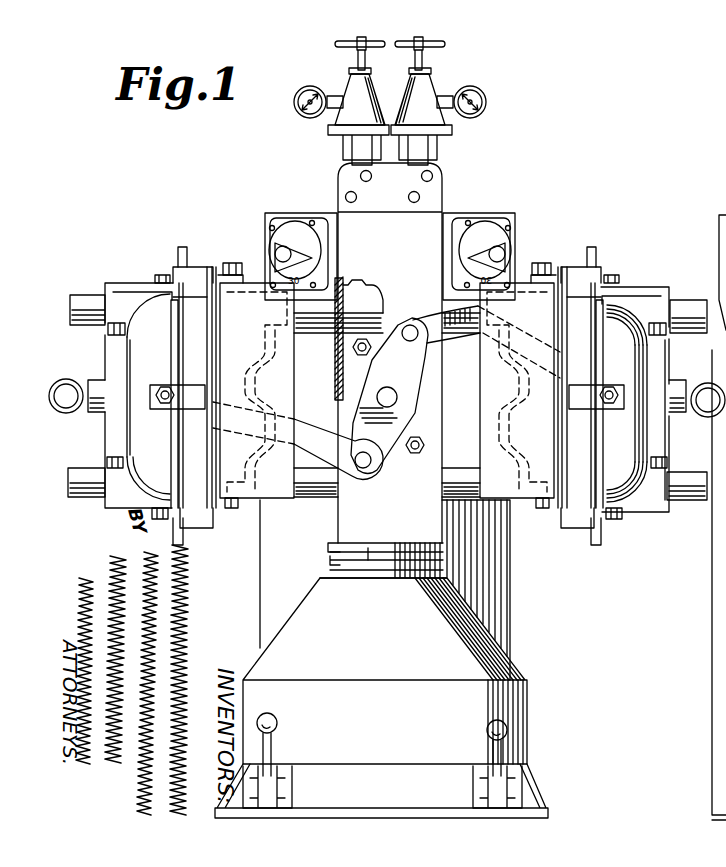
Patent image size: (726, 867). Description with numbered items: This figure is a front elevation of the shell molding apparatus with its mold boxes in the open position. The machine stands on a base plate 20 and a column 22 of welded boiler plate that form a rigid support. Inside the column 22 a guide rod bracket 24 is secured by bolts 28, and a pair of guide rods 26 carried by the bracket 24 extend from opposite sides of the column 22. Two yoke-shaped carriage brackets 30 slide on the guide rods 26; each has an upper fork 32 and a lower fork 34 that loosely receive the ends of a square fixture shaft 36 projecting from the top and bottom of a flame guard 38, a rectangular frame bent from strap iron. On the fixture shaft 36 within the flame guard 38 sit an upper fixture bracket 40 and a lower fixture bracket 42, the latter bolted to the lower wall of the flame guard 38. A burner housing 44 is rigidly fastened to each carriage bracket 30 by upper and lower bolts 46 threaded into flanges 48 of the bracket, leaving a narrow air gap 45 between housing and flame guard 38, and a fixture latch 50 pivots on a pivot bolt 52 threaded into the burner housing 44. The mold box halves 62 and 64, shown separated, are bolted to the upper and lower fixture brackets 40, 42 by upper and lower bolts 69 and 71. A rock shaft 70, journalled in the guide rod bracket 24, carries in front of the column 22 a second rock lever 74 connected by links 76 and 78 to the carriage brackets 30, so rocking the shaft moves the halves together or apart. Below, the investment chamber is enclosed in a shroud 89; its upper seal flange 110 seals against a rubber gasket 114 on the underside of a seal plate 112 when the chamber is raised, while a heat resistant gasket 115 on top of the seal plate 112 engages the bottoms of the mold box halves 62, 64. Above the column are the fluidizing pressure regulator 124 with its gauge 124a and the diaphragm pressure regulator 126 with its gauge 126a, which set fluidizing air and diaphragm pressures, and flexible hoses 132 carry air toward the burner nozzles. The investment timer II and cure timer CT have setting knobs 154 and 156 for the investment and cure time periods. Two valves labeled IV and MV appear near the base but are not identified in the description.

The base plate 20 is at (385, 810).
The column 22 is at (395, 262).
The guide rod bracket 24 is at (366, 312).
The guide rods 26 is at (96, 310).
The bolts 28 is at (370, 348).
The carriage brackets 30 is at (118, 300).
The upper fork 32 is at (186, 277).
The lower fork 34 is at (205, 526).
The fixture shaft 36 is at (180, 532).
The flame guard 38 is at (192, 333).
The upper fixture bracket 40 is at (226, 273).
The lower fixture bracket 42 is at (216, 508).
The burner housing 44 is at (127, 430).
The air gap 45 is at (181, 353).
The bolts 46 is at (163, 275).
The flanges 48 is at (130, 283).
The fixture latch 50 is at (189, 410).
The pivot bolt 52 is at (160, 407).
The mold box half 62 is at (284, 390).
The mold box half 64 is at (480, 411).
The upper bolts 69 is at (542, 263).
The rock shaft 70 is at (387, 392).
The lower bolts 71 is at (235, 509).
The second rock lever 74 is at (401, 424).
The link 76 is at (322, 431).
The link 78 is at (448, 340).
The shroud 89 is at (372, 630).
The seal flange 110 is at (330, 572).
The seal plate 112 is at (368, 556).
The gasket 114 is at (330, 556).
The heat resistant gasket 115 is at (328, 539).
The fluidizing pressure regulator 124 is at (356, 90).
The pressure gauge 124a is at (302, 112).
The diaphragm pressure regulator 126 is at (421, 95).
The pressure gauge 126a is at (522, 117).
The flexible hoses 132 is at (88, 420).
The timer setting knob 154 is at (294, 242).
The timer setting knob 156 is at (486, 242).
The investment timer II is at (264, 231).
The cure timer CT is at (513, 221).
The inlet valve IV is at (282, 757).
The main valve MV is at (483, 759).